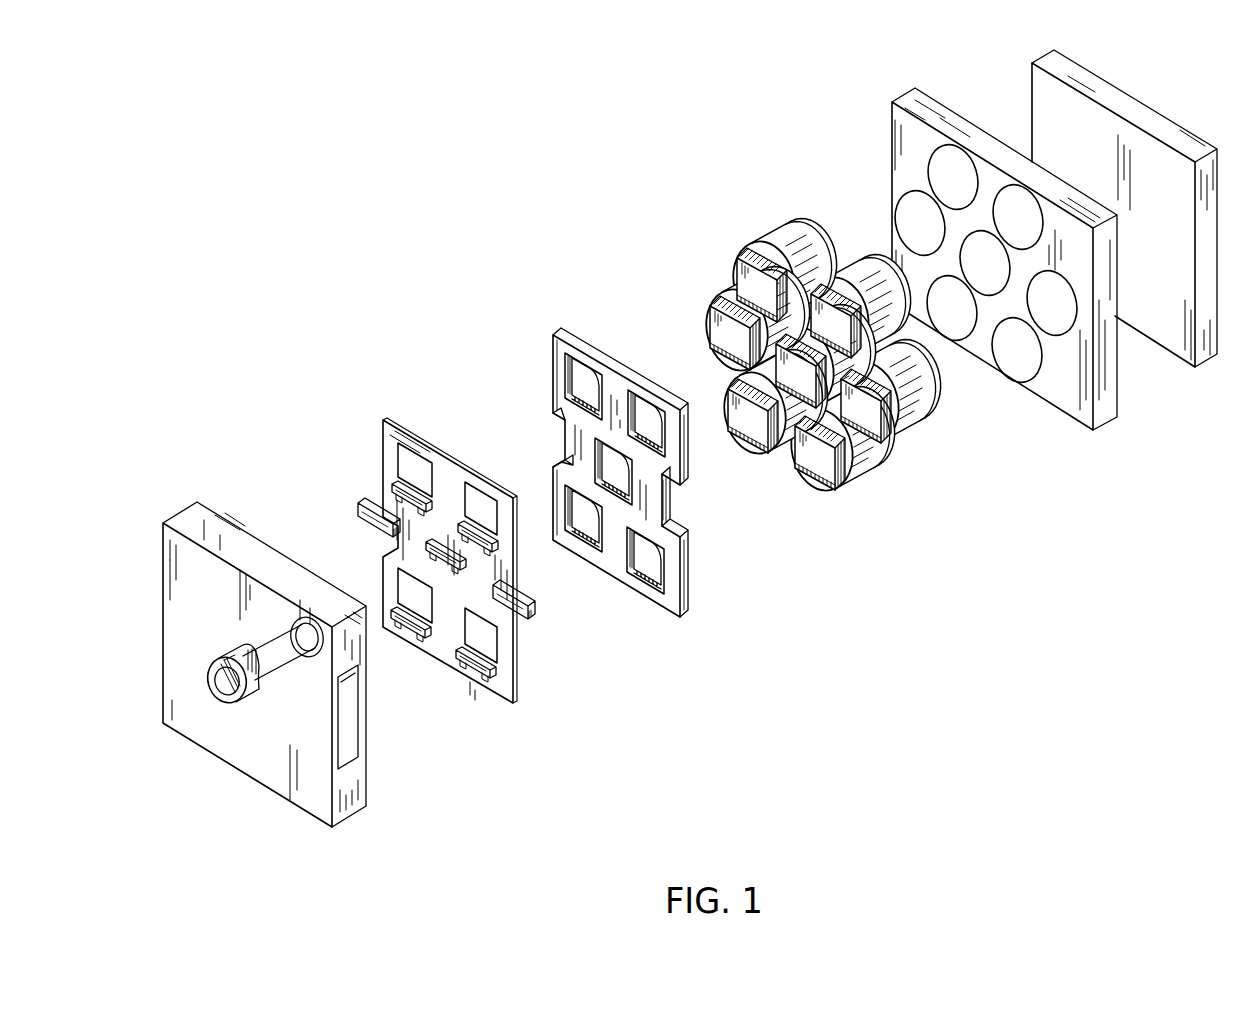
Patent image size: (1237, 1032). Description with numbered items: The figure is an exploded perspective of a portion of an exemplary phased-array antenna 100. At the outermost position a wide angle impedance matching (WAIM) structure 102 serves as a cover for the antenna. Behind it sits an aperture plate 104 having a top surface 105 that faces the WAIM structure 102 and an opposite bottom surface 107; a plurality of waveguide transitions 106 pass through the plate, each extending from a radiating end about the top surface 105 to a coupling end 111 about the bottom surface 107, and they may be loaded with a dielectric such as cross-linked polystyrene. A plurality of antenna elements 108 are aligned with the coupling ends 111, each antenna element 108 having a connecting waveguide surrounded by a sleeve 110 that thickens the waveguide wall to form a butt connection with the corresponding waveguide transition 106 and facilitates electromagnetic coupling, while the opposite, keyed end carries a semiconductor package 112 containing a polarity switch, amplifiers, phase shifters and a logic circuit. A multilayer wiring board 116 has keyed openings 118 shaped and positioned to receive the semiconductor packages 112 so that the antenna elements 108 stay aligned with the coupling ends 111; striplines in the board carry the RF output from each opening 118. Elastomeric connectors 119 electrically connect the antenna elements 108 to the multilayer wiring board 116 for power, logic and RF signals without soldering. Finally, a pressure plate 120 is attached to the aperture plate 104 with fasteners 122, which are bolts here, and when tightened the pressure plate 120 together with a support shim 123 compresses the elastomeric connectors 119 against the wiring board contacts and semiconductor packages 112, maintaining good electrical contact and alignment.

The antenna 100 is at (631, 168).
The wide angle impedance matching (WAIM) structure 102 is at (1048, 52).
The aperture plate 104 is at (998, 231).
The top surface 105 is at (988, 128).
The waveguide transitions 106 is at (946, 178).
The bottom surface 107 is at (900, 128).
The antenna elements 108 is at (814, 358).
The sleeve 110 is at (833, 263).
The coupling end 111 is at (897, 233).
The semiconductor package 112 is at (715, 333).
The multilayer wiring board 116 is at (616, 473).
The openings 118 is at (588, 382).
The elastomeric connectors 119 is at (358, 503).
The pressure plate 120 is at (355, 820).
The fasteners 122 is at (247, 690).
The support shim 123 is at (434, 566).